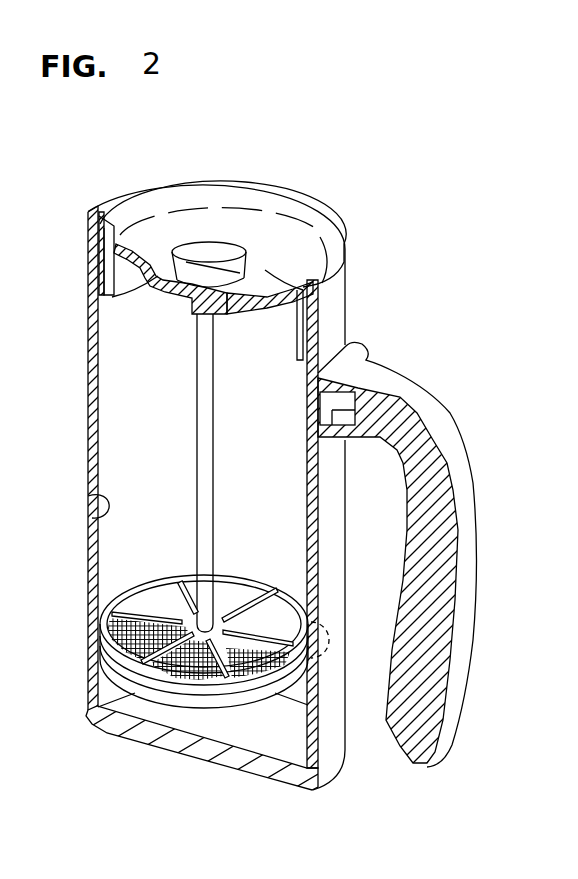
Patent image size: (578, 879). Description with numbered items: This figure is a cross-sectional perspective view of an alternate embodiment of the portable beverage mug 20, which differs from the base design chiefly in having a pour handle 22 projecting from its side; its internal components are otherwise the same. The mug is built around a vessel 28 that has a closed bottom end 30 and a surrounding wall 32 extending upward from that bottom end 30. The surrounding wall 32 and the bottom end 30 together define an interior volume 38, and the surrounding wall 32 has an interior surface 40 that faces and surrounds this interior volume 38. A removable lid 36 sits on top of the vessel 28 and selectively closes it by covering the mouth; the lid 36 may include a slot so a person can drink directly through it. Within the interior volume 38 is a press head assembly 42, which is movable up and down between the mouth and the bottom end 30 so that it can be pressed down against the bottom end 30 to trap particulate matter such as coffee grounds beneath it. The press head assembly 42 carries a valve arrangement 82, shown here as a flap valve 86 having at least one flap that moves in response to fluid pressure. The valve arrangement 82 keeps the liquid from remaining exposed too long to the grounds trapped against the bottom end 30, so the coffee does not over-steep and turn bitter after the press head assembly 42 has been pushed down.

The portable beverage mug 20 is at (372, 92).
The pour handle 22 is at (470, 493).
The vessel 28 is at (88, 378).
The bottom end 30 is at (193, 765).
The surrounding wall 32 is at (92, 549).
The lid 36 is at (327, 230).
The interior volume 38 is at (98, 495).
The interior surface 40 is at (105, 427).
The press head assembly 42 is at (244, 542).
The valve arrangement 82 is at (141, 578).
The flap valve 86 is at (237, 587).